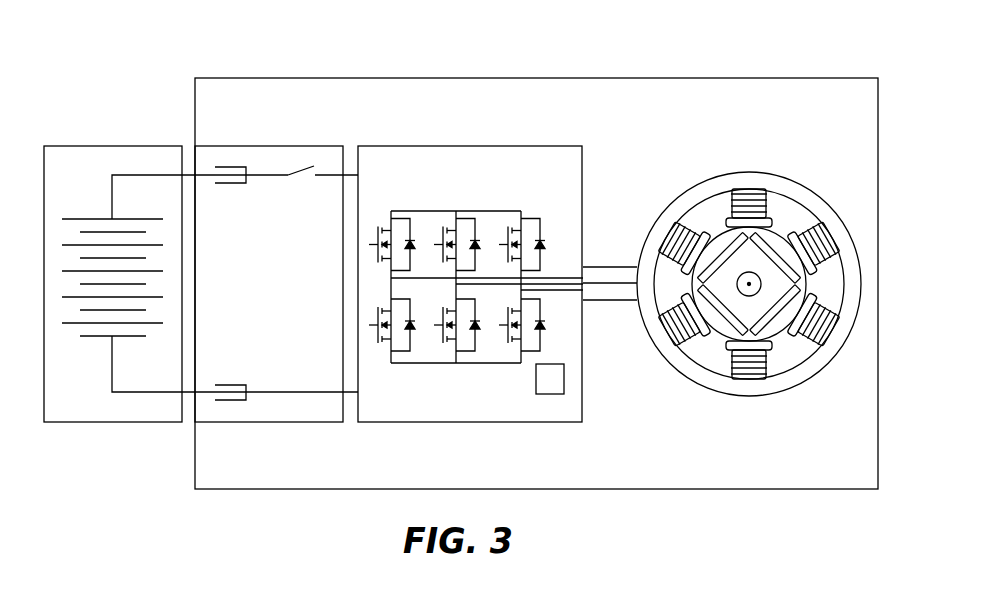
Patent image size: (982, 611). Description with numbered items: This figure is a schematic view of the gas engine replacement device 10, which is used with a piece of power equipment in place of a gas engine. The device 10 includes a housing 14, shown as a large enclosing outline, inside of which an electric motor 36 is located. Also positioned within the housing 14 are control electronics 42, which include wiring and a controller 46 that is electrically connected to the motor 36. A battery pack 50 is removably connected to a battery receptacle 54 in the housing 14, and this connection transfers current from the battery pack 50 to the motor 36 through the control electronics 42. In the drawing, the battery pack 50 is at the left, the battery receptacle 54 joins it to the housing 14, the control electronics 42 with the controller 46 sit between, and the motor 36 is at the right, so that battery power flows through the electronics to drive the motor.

The gas engine replacement device 10 is at (204, 54).
The housing 14 is at (652, 78).
The electric motor 36 is at (706, 394).
The control electronics 42 is at (462, 423).
The controller 46 is at (550, 394).
The battery pack 50 is at (117, 423).
The battery receptacle 54 is at (285, 423).